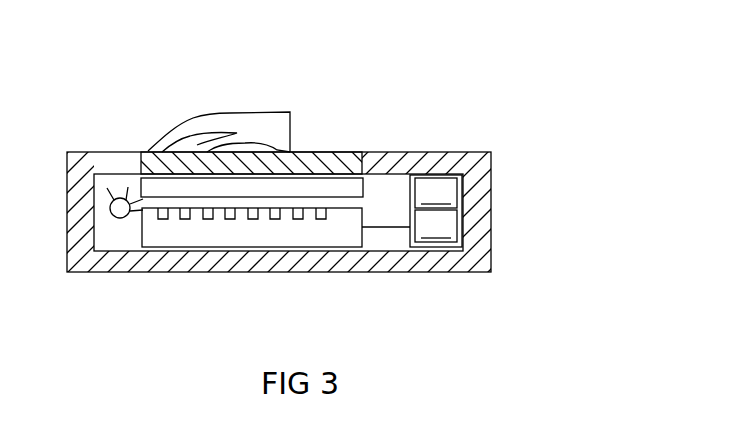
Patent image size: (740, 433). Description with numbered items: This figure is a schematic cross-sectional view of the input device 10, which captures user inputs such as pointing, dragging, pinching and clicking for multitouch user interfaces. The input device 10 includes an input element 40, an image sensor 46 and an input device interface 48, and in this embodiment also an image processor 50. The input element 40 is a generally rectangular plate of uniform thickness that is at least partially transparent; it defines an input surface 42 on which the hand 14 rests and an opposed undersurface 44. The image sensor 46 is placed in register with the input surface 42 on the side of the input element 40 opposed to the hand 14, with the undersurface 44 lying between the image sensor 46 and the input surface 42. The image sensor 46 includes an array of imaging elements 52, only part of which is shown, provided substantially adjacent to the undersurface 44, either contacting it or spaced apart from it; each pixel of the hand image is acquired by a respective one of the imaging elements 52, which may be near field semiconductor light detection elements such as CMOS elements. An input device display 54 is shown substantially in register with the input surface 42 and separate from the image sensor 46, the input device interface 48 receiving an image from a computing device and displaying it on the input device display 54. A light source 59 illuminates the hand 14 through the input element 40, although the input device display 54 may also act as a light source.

The electronic device 10 is at (500, 85).
The finger 14 is at (245, 137).
The cover layer 40 is at (321, 156).
The touch surface layer 42 is at (297, 152).
The substrate 44 is at (345, 170).
The circuit board 46 is at (363, 246).
The memory 48 is at (436, 211).
The processor 50 is at (436, 226).
The housing 52 is at (490, 153).
The sensor electrodes 54 is at (327, 215).
The light source 59 is at (118, 219).